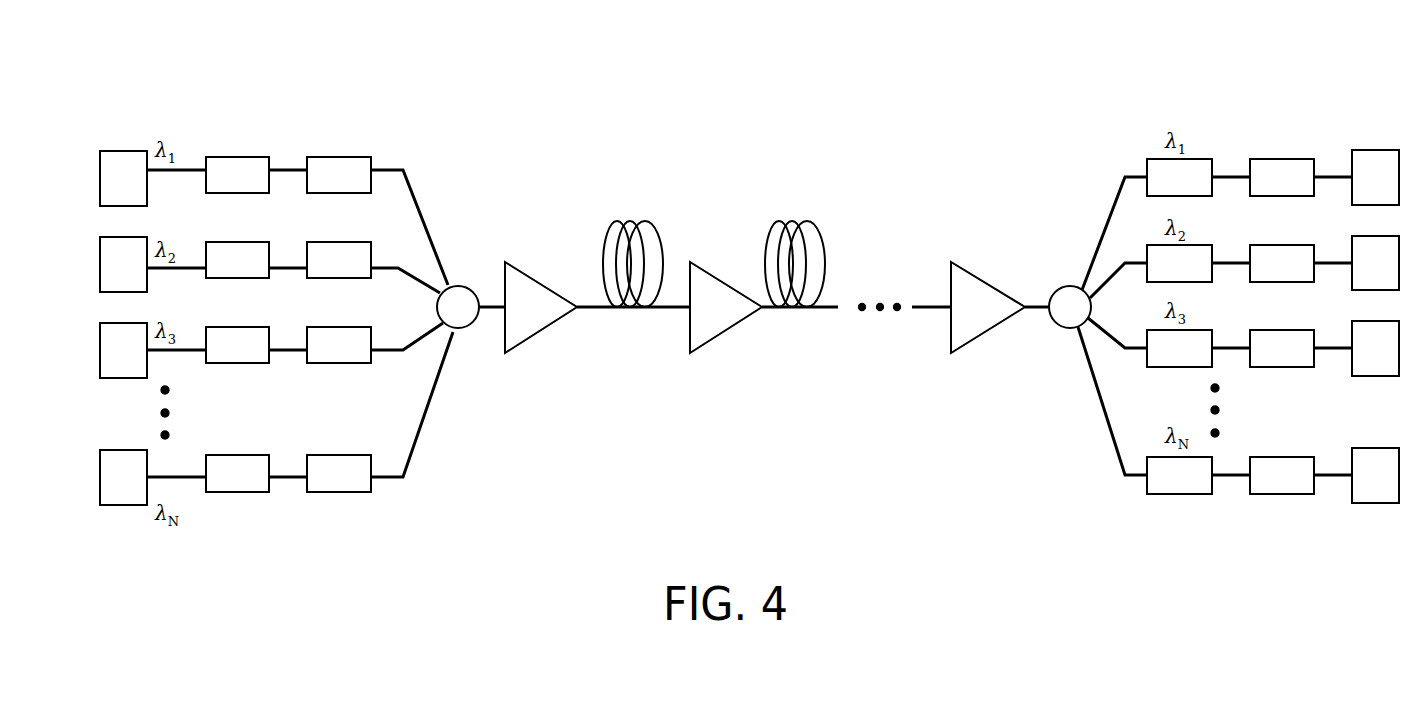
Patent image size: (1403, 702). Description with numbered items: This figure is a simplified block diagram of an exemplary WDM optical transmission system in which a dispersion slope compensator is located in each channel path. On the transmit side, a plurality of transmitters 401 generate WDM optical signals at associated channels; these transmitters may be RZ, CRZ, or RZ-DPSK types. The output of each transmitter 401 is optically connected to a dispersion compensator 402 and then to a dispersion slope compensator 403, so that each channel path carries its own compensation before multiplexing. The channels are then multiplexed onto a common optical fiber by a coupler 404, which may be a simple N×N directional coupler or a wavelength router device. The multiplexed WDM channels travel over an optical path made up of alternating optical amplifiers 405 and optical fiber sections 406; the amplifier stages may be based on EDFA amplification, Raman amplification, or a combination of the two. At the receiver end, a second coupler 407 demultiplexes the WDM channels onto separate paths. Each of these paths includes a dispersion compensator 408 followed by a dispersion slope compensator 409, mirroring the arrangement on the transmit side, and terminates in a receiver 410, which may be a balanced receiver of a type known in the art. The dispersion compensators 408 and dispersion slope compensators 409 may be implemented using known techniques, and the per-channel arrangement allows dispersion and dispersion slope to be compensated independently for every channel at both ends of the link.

The transmitters 401 is at (125, 150).
The dispersion compensators 402 is at (253, 157).
The dispersion slope compensators 403 is at (362, 157).
The coupler 404 is at (465, 330).
The optical amplifiers 405 is at (547, 327).
The optical fiber sections 406 is at (618, 220).
The coupler 407 is at (1060, 282).
The dispersion compensators 408 is at (1153, 158).
The dispersion slope compensators 409 is at (1283, 158).
The receivers 410 is at (1373, 150).